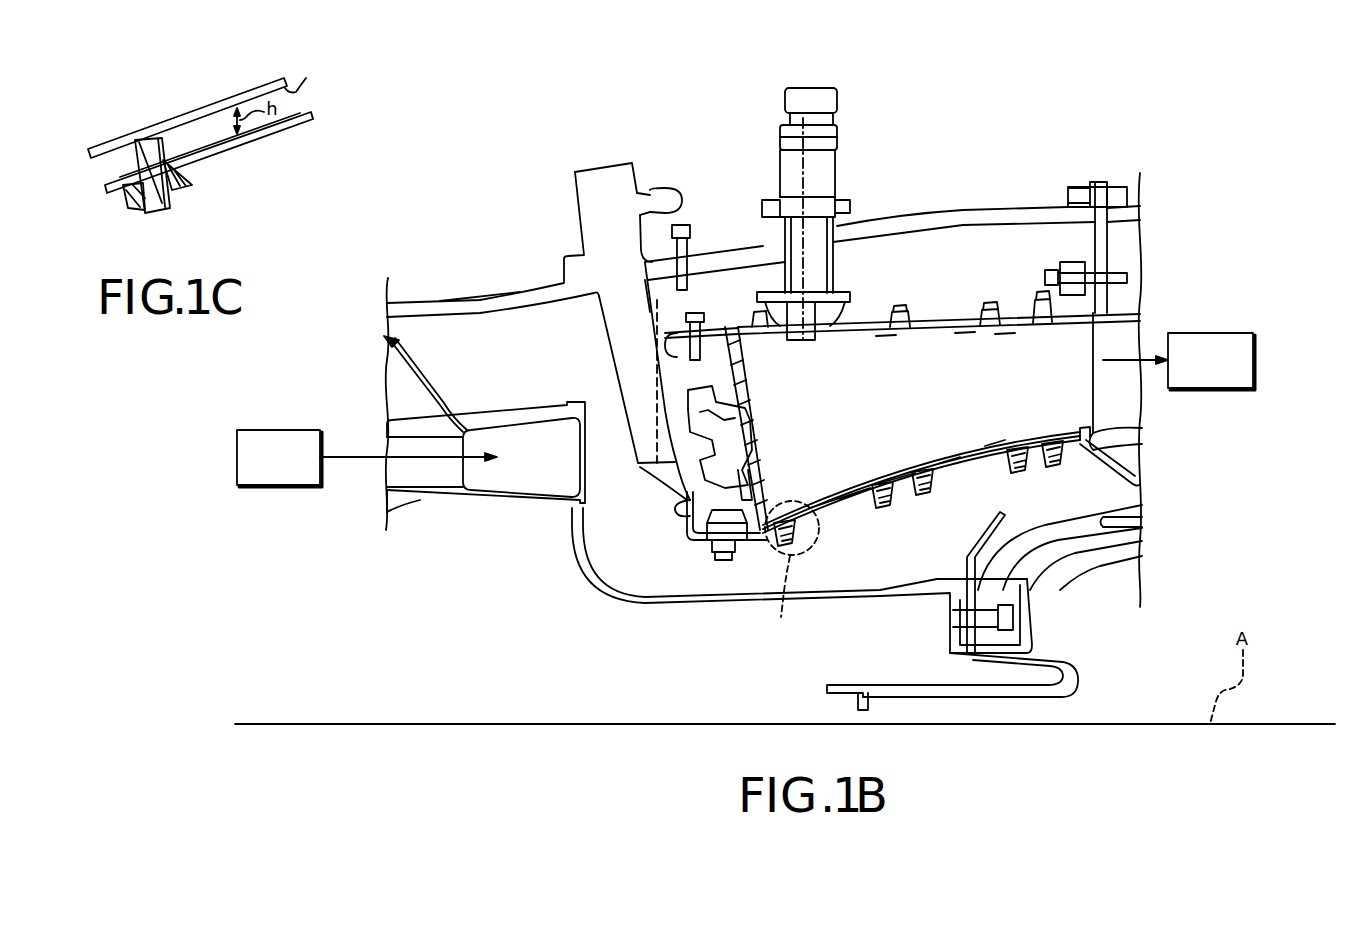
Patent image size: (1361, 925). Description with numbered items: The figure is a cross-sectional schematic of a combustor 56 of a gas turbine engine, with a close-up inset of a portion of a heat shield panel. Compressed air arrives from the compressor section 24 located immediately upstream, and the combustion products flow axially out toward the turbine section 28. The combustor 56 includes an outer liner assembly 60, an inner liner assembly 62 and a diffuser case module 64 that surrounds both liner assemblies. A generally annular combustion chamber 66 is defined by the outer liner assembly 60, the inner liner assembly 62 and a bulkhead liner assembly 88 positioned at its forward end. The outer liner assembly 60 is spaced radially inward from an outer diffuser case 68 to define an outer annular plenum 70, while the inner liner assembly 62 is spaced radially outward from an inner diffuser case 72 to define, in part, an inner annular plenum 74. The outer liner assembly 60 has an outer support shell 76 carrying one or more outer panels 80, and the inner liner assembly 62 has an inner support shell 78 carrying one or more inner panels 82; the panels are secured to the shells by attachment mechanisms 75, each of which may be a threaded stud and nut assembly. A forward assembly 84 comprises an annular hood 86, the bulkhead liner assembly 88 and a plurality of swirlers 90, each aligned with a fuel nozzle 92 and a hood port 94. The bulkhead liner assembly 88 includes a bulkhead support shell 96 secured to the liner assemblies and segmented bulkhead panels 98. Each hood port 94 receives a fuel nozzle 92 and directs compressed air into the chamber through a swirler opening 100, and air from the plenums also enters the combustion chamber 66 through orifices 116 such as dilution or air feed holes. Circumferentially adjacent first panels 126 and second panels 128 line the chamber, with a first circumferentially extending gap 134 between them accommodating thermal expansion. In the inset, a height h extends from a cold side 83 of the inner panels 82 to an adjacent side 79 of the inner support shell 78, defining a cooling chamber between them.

In FIG. 1B, the compressor section 24 is at (267, 468).
In FIG. 1B, the turbine section 28 is at (1199, 371).
In FIG. 1B, the combustor 56 is at (1033, 147).
In FIG. 1B, the outer liner assembly 60 is at (947, 316).
In FIG. 1B, the inner liner assembly 62 is at (900, 498).
In FIG. 1B, the diffuser case module 64 is at (987, 208).
In FIG. 1B, the combustion chamber 66 is at (941, 404).
In FIG. 1B, the outer diffuser case 68 is at (873, 225).
In FIG. 1B, the outer annular plenum 70 is at (856, 273).
In FIG. 1B, the inner diffuser case 72 is at (733, 603).
In FIG. 1B, the inner annular plenum 74 is at (838, 574).
In FIG. 1C, the attachment mechanism 75 is at (177, 210).
In FIG. 1B, the attachment mechanism 75 is at (1052, 467).
In FIG. 1B, the outer support shell 76 is at (480, 297).
In FIG. 1C, the inner support shell 78 is at (240, 148).
In FIG. 1B, the inner support shell 78 is at (978, 472).
In FIG. 1C, the adjacent side of the inner support shell 79 is at (296, 112).
In FIG. 1B, the outer panels 80 is at (535, 283).
In FIG. 1C, the inner panels 82 is at (203, 108).
In FIG. 1B, the inner panels 82 is at (826, 497).
In FIG. 1C, the cold side 83 is at (306, 78).
In FIG. 1B, the forward assembly 84 is at (676, 547).
In FIG. 1B, the annular hood 86 is at (676, 508).
In FIG. 1B, the bulkhead liner assembly 88 is at (745, 374).
In FIG. 1B, the swirler 90 is at (747, 457).
In FIG. 1B, the fuel nozzle 92 is at (602, 249).
In FIG. 1B, the hood port 94 is at (667, 493).
In FIG. 1B, the bulkhead support shell 96 is at (680, 523).
In FIG. 1B, the bulkhead panels 98 is at (753, 492).
In FIG. 1B, the swirler opening 100 is at (750, 425).
In FIG. 1B, the orifices 116 is at (963, 330).
In FIG. 1B, the first panels 126 is at (866, 345).
In FIG. 1B, the second panels 128 is at (1003, 331).
In FIG. 1B, the first circumferentially extending gap 134 is at (885, 340).